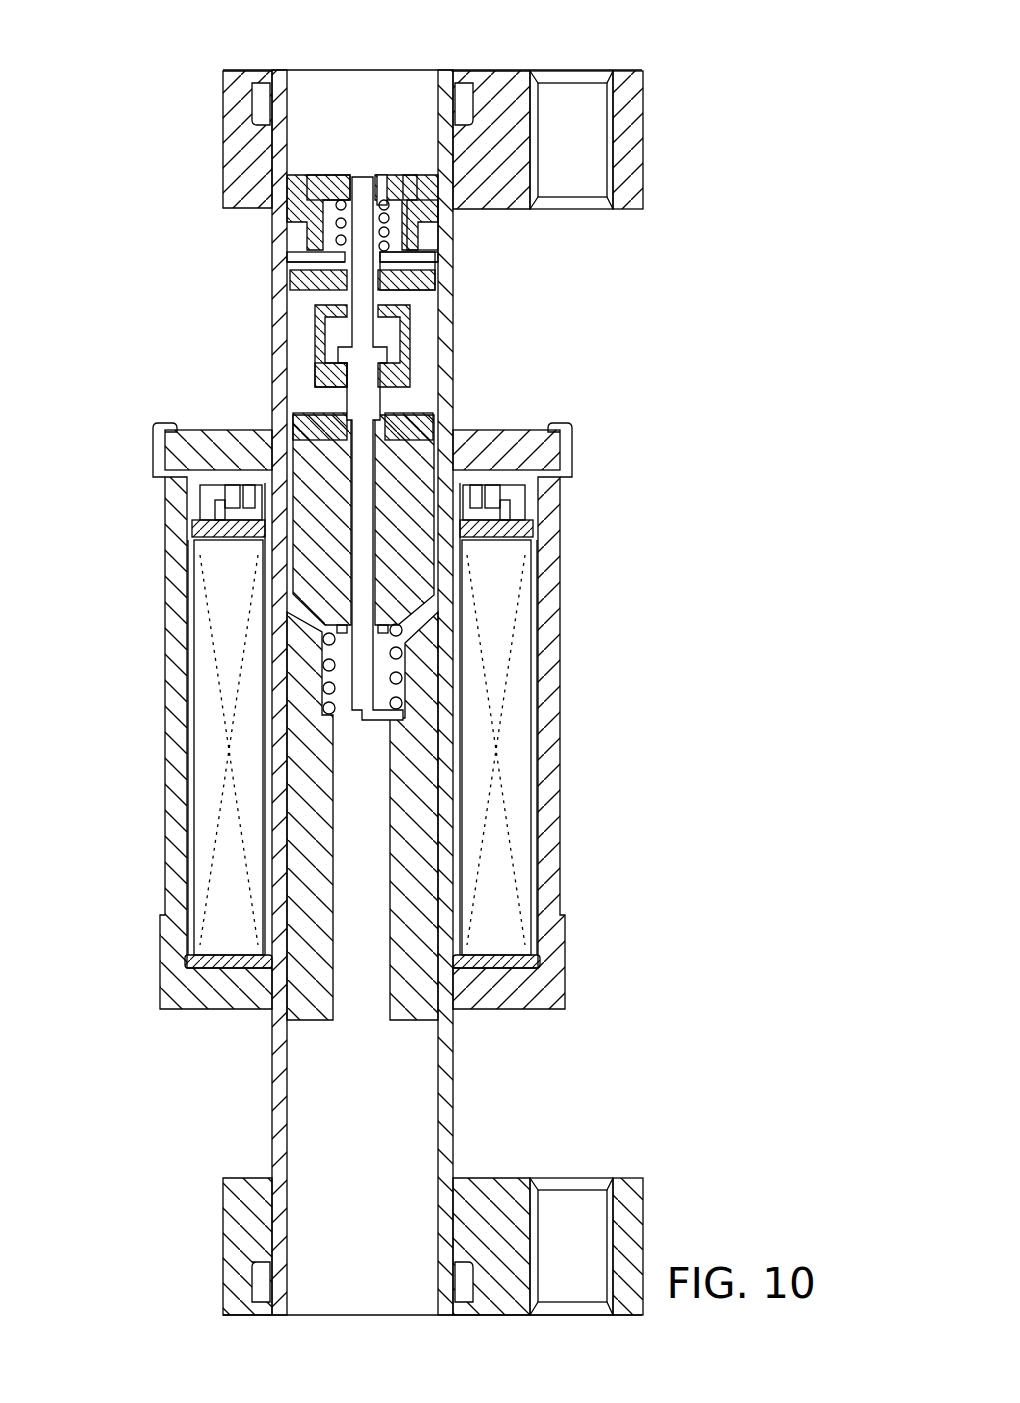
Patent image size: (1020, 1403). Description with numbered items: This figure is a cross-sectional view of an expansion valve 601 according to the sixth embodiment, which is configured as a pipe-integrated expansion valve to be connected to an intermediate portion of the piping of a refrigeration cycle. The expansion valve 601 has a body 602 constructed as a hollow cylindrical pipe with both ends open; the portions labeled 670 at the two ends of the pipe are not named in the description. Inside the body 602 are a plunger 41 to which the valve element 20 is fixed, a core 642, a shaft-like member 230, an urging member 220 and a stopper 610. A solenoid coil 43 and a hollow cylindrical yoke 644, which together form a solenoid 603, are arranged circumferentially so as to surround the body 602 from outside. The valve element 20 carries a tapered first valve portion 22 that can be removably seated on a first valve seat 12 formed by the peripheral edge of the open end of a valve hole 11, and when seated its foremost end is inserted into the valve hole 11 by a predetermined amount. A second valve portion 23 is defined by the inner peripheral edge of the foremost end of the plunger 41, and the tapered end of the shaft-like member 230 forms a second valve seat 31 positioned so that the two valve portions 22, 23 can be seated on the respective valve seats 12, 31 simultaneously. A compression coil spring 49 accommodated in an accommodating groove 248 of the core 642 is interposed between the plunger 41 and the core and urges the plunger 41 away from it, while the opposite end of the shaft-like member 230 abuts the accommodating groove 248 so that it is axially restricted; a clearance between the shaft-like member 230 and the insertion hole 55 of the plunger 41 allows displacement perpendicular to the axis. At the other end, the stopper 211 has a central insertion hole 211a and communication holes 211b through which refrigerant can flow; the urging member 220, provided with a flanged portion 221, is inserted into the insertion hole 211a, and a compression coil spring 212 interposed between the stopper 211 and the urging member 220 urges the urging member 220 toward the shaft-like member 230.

The expansion valve 601 is at (692, 113).
The body 602 is at (455, 345).
The solenoid 603 is at (560, 515).
The flange 670 is at (510, 70).
The stopper 610 is at (300, 203).
The stopper 211 is at (318, 178).
The insertion hole 211a is at (382, 177).
The communication holes 211b is at (400, 180).
The compression coil spring 212 is at (338, 198).
The flanged portion 221 is at (340, 255).
The urging member 220 is at (335, 262).
The valve portion 22 is at (345, 290).
The valve element 20 is at (318, 322).
The valve portion 23 is at (322, 372).
The shaft-like member 230 is at (345, 408).
The valve hole 11 is at (385, 262).
The valve seat 12 is at (388, 290).
The valve seat 31 is at (385, 373).
The plunger 41 is at (300, 568).
The insertion hole 55 is at (375, 572).
The yoke 644 is at (165, 655).
The accommodating groove 248 is at (400, 633).
The compression coil spring 49 is at (398, 678).
The solenoid coil 43 is at (195, 775).
The core 642 is at (285, 850).